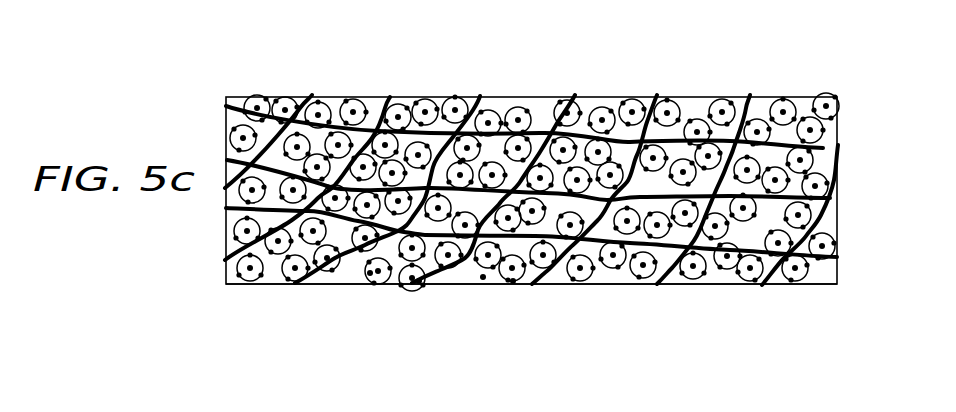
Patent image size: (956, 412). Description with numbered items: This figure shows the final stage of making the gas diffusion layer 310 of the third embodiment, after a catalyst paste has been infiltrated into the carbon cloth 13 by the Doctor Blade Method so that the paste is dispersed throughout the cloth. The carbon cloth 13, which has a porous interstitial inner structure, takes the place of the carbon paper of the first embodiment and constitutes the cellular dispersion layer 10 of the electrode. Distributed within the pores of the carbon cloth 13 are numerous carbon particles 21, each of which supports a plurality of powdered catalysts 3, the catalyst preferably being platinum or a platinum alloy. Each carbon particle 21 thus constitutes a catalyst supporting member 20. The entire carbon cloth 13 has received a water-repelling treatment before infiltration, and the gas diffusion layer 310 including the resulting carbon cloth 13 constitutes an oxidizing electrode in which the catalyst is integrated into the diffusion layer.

The powdered catalyst 3 is at (404, 103).
The cellular dispersion layer 10 is at (797, 97).
The carbon cloth 13 is at (772, 103).
The catalyst supporting member 20 is at (370, 275).
The carbon particle 21 is at (591, 95).
The gas diffusion layer 310 is at (719, 307).